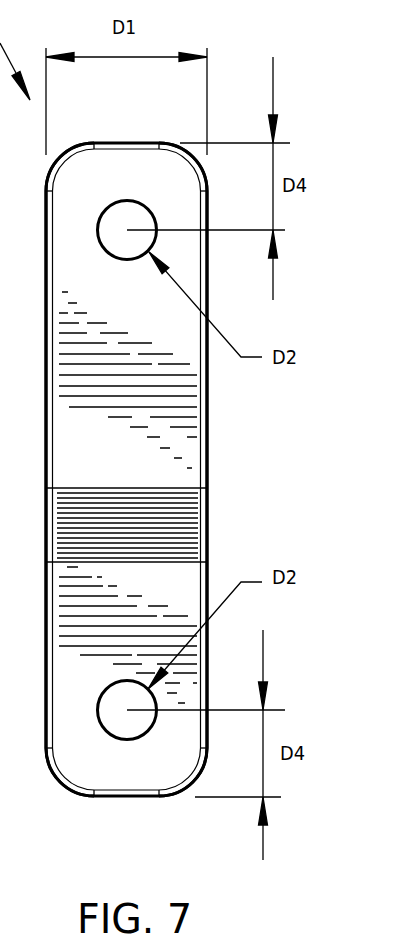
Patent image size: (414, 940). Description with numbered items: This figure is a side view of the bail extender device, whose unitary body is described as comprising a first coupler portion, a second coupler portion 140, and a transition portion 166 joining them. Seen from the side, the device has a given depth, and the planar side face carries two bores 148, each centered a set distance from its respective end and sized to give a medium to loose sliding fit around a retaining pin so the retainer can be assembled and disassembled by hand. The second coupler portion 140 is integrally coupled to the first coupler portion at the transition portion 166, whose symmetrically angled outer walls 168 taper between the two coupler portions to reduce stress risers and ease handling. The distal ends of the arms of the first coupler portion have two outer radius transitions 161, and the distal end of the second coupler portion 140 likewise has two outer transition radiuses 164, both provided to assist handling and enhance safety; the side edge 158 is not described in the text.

The second coupler portion 140 is at (70, 826).
The bore 148 is at (148, 207).
The side edge 158 is at (46, 688).
The outer radius transitions 161 is at (178, 143).
The outer transition radiuses 164 is at (199, 776).
The transition portion 166 is at (230, 463).
The outer walls 168 is at (176, 516).